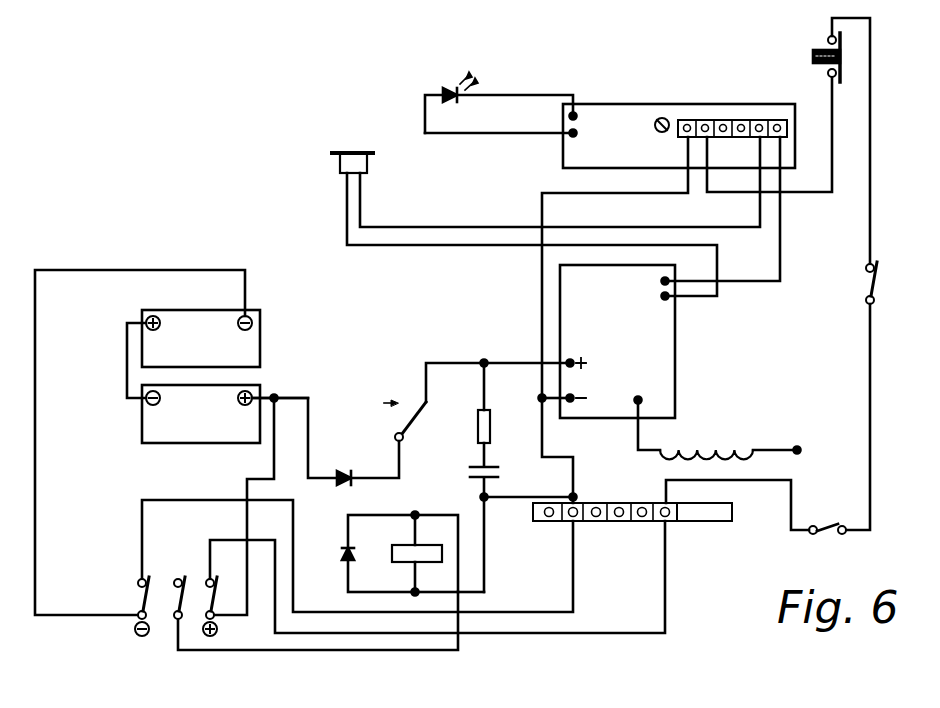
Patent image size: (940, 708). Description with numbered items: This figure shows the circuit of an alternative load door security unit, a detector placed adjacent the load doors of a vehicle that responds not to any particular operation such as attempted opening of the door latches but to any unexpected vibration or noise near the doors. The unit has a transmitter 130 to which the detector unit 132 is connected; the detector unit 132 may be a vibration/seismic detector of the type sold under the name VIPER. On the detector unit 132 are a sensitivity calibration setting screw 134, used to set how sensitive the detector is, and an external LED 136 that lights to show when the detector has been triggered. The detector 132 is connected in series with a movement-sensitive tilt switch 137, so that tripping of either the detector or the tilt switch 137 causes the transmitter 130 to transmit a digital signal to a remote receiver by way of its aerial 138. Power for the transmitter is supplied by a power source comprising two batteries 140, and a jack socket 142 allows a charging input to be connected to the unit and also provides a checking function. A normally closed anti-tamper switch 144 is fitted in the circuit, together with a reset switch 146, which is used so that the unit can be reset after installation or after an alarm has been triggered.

The transmitter 130 is at (636, 352).
The detector unit 132 is at (636, 159).
The sensitivity calibration setting screw 134 is at (662, 118).
The external LED 136 is at (440, 95).
The sensor 137 is at (345, 166).
The aerial 138 is at (704, 445).
The batteries 140 is at (215, 362).
The jack socket 142 is at (138, 598).
The anti-tamper switch 144 is at (880, 280).
The reset switch 146 is at (810, 60).